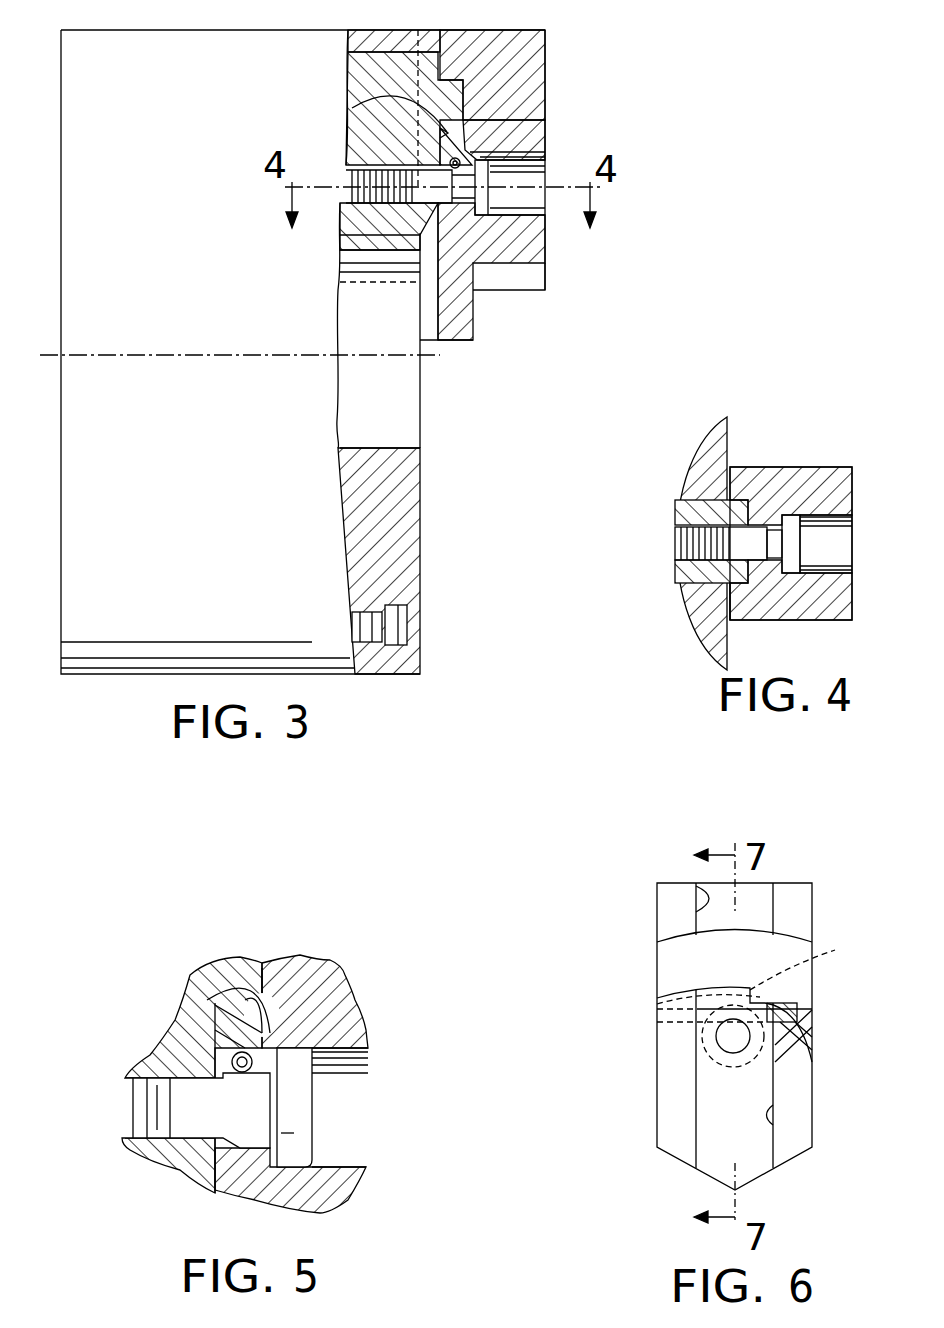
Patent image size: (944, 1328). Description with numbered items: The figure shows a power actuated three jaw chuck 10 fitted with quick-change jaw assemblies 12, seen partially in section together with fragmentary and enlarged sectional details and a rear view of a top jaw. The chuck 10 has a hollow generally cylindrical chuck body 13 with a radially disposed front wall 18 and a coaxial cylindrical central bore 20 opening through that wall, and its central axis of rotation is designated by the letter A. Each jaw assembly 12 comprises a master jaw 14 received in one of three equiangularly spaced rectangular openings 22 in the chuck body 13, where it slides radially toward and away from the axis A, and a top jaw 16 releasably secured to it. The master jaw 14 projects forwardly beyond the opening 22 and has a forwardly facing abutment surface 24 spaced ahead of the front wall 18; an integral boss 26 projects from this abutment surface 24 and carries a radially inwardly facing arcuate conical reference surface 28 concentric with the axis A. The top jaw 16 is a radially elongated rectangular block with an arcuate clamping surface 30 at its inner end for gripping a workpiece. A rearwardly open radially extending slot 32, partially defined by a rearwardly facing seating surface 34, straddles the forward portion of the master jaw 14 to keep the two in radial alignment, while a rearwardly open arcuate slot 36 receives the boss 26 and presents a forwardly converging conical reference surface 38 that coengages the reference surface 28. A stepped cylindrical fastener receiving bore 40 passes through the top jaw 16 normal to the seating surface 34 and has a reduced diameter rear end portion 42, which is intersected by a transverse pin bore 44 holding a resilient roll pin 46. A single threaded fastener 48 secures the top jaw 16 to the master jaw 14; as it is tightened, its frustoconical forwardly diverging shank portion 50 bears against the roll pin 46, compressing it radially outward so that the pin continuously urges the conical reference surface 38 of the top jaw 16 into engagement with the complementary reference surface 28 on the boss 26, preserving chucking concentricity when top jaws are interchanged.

In FIG. 3, the chuck 10 is at (328, 16).
In FIG. 4, the chuck 10 is at (658, 502).
In FIG. 3, the jaw assembly 12 is at (562, 90).
In FIG. 4, the jaw assembly 12 is at (821, 450).
In FIG. 3, the chuck body 13 is at (163, 97).
In FIG. 4, the chuck body 13 is at (706, 635).
In FIG. 3, the master jaw 14 is at (406, 16).
In FIG. 4, the master jaw 14 is at (660, 577).
In FIG. 5, the master jaw 14 is at (136, 1184).
In FIG. 3, the top jaw 16 is at (562, 297).
In FIG. 4, the top jaw 16 is at (797, 634).
In FIG. 5, the top jaw 16 is at (248, 1218).
In FIG. 6, the top jaw 16 is at (808, 1163).
In FIG. 3, the front wall 18 is at (422, 536).
In FIG. 3, the central bore 20 is at (385, 448).
In FIG. 3, the opening 22 is at (340, 240).
In FIG. 4, the opening 22 is at (683, 577).
In FIG. 3, the abutment surface 24 is at (438, 63).
In FIG. 4, the abutment surface 24 is at (770, 490).
In FIG. 3, the boss 26 is at (480, 124).
In FIG. 5, the boss 26 is at (236, 985).
In FIG. 3, the reference surface 28 is at (472, 162).
In FIG. 5, the reference surface 28 is at (280, 1000).
In FIG. 3, the clamping surface 30 is at (497, 268).
In FIG. 3, the slot 32 is at (440, 337).
In FIG. 6, the slot 32 is at (705, 900).
In FIG. 3, the seating surface 34 is at (432, 252).
In FIG. 4, the seating surface 34 is at (735, 600).
In FIG. 6, the seating surface 34 is at (723, 1143).
In FIG. 6, the arcuate slot 36 is at (790, 952).
In FIG. 3, the conical reference surface 38 is at (352, 108).
In FIG. 5, the conical reference surface 38 is at (232, 1012).
In FIG. 6, the conical reference surface 38 is at (762, 991).
In FIG. 3, the fastener receiving bore 40 is at (516, 187).
In FIG. 4, the fastener receiving bore 40 is at (840, 565).
In FIG. 5, the fastener receiving bore 40 is at (345, 1148).
In FIG. 4, the reduced diameter rear end portion 42 is at (790, 520).
In FIG. 5, the reduced diameter rear end portion 42 is at (232, 1098).
In FIG. 6, the reduced diameter rear end portion 42 is at (748, 1043).
In FIG. 5, the pin bore 44 is at (347, 1013).
In FIG. 6, the pin bore 44 is at (805, 1015).
In FIG. 5, the roll pin 46 is at (232, 1058).
In FIG. 6, the roll pin 46 is at (784, 1012).
In FIG. 3, the threaded fastener 48 is at (483, 202).
In FIG. 4, the threaded fastener 48 is at (800, 548).
In FIG. 5, the threaded fastener 48 is at (305, 1125).
In FIG. 3, the shank portion 50 is at (437, 206).
In FIG. 4, the shank portion 50 is at (762, 545).
In FIG. 5, the shank portion 50 is at (210, 1153).
In FIG. 3, the axis of rotation A is at (438, 358).